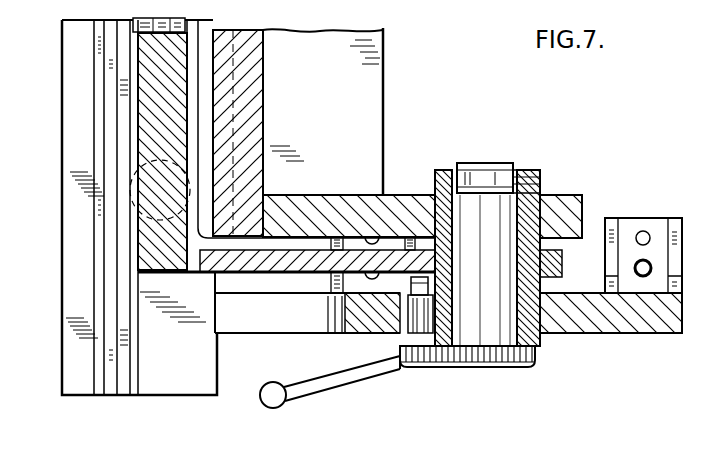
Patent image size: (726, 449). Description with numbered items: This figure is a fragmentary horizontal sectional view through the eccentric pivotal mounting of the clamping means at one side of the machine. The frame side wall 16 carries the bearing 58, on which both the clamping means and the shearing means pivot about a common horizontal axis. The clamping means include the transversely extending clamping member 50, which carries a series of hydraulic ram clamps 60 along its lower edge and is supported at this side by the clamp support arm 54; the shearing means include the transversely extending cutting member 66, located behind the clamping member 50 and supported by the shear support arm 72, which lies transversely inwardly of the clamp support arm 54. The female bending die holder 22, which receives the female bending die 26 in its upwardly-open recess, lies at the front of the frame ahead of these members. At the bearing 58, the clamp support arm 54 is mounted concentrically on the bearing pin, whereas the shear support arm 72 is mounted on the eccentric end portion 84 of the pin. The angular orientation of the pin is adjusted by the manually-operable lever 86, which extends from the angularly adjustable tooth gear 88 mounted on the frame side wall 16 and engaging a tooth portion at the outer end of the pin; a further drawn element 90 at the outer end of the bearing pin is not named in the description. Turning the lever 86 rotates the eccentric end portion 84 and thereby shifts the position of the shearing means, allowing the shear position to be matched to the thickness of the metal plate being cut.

The frame side wall 16 is at (580, 323).
The female bending die holder 22 is at (100, 375).
The female bending die 26 is at (112, 387).
The clamping member 50 is at (143, 117).
The clamp support arm 54 is at (255, 265).
The bearing 58 is at (523, 371).
The hydraulic ram clamps 60 is at (135, 162).
The cutting member 66 is at (252, 92).
The shear support arm 72 is at (315, 205).
The eccentric end portion 84 is at (436, 196).
The manually-operable lever 86 is at (366, 378).
The angularly adjustable tooth gear 88 is at (418, 360).
The knurled nut 90 is at (483, 358).